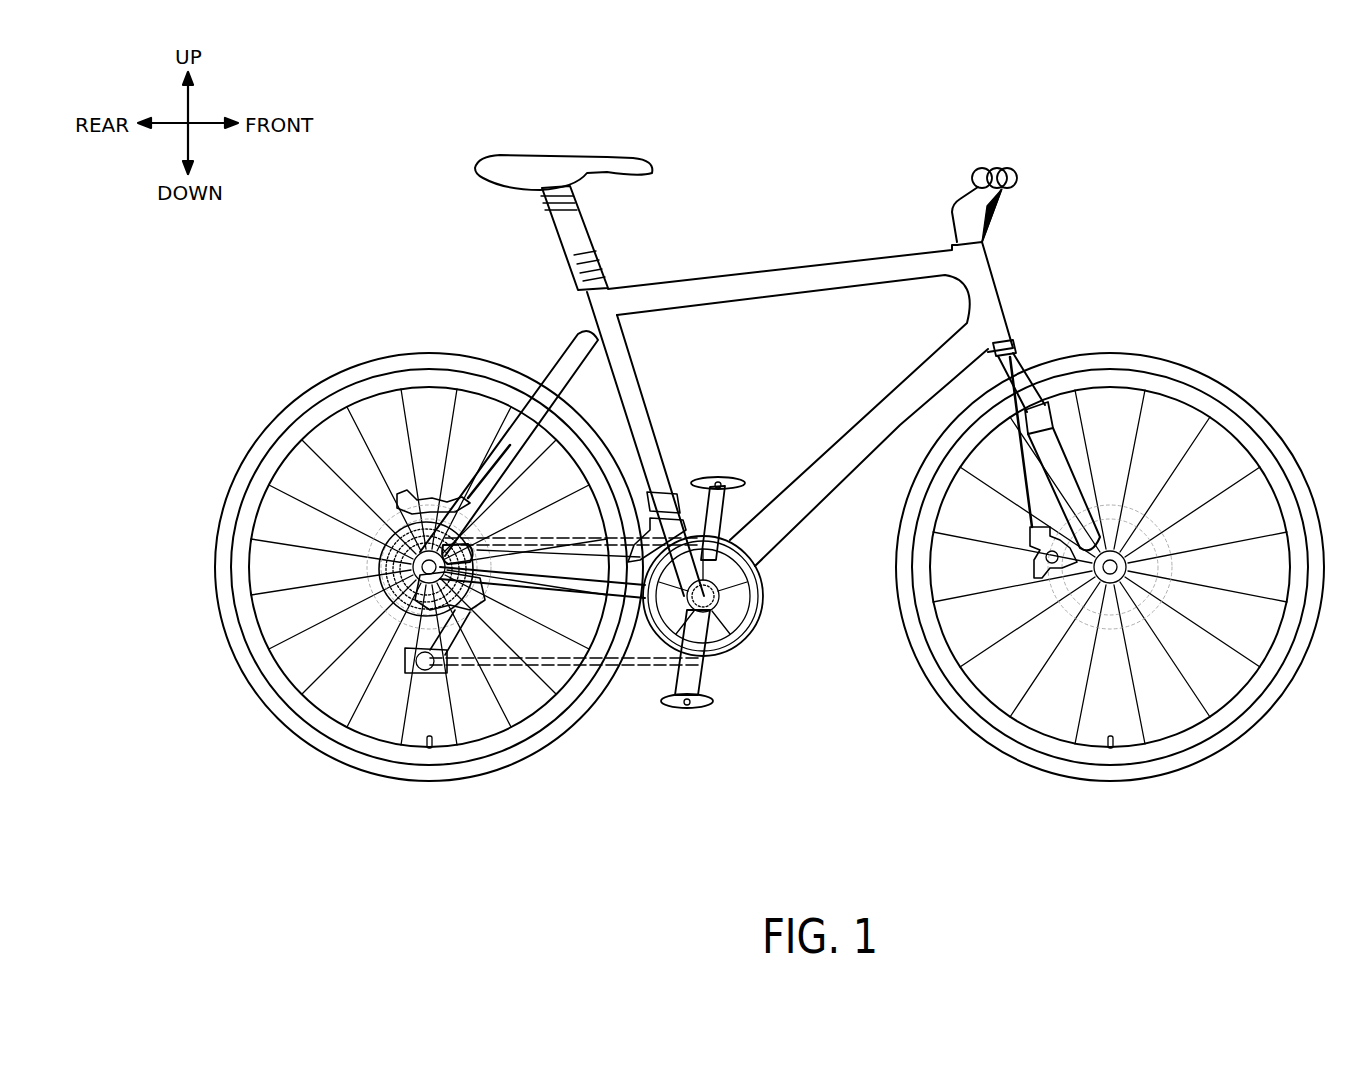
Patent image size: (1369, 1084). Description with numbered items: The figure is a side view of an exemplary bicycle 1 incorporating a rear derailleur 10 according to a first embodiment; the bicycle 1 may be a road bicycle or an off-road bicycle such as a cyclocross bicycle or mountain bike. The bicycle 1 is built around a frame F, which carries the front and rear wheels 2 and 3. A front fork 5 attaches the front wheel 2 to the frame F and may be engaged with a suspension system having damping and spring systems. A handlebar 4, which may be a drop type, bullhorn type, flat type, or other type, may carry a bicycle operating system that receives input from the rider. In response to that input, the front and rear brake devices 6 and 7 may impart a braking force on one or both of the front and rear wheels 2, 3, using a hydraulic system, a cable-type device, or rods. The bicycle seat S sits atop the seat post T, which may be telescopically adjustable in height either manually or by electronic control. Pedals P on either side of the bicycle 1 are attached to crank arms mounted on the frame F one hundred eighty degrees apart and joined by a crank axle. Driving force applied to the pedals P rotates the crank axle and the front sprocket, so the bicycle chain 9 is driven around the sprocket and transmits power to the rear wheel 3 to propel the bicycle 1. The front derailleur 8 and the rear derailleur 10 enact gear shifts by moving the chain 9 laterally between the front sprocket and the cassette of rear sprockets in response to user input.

The bicycle 1 is at (1286, 119).
The front wheel 2 is at (1251, 402).
The rear wheel 3 is at (318, 386).
The handlebar 4 is at (992, 170).
The front fork 5 is at (1020, 360).
The front brake device 6 is at (1040, 562).
The rear brake device 7 is at (428, 493).
The front derailleur 8 is at (642, 493).
The bicycle chain 9 is at (642, 668).
The rear derailleur 10 is at (400, 622).
The bicycle seat S is at (573, 150).
The seat post T is at (590, 225).
The frame F is at (905, 395).
The pedals P is at (688, 710).